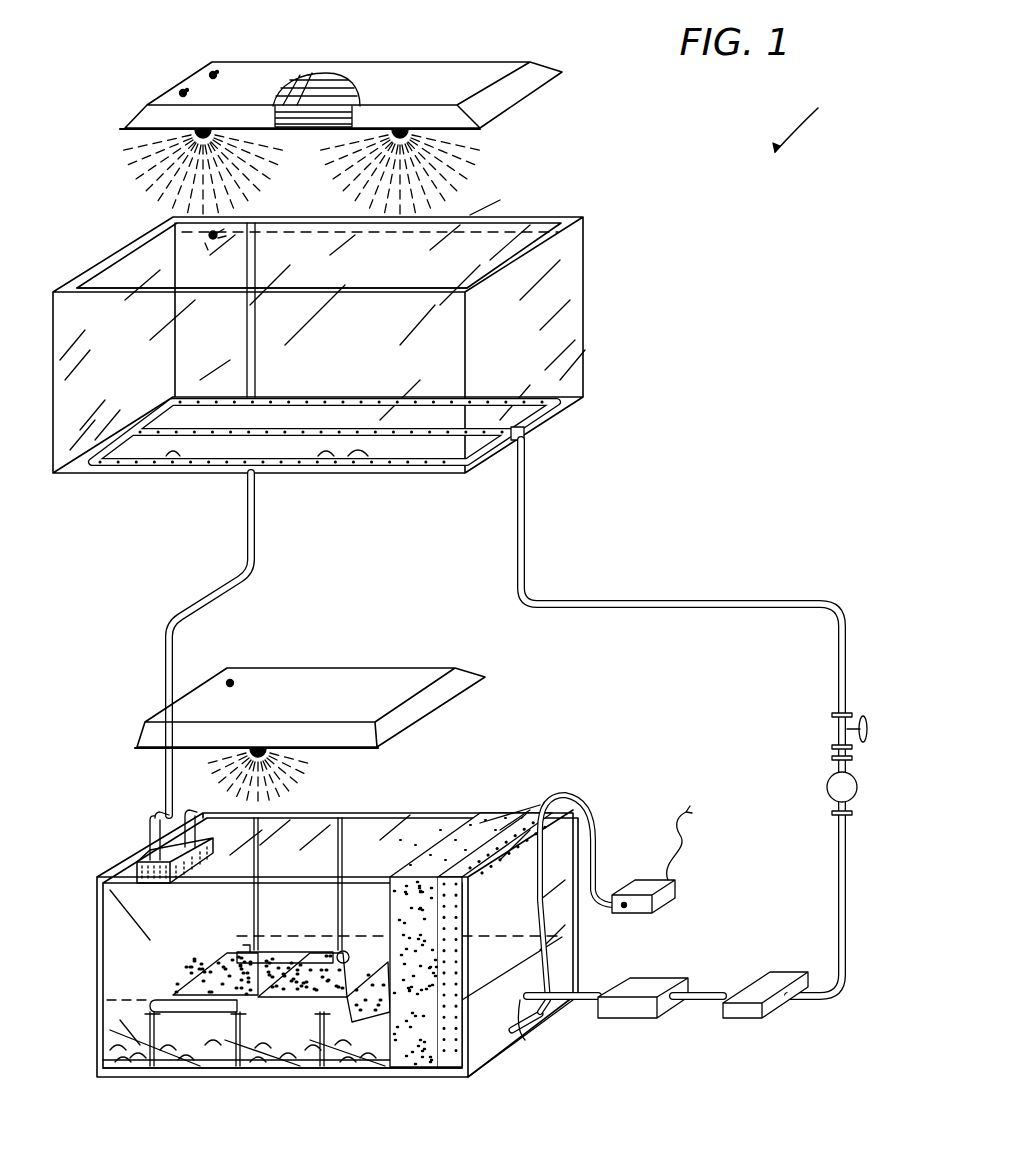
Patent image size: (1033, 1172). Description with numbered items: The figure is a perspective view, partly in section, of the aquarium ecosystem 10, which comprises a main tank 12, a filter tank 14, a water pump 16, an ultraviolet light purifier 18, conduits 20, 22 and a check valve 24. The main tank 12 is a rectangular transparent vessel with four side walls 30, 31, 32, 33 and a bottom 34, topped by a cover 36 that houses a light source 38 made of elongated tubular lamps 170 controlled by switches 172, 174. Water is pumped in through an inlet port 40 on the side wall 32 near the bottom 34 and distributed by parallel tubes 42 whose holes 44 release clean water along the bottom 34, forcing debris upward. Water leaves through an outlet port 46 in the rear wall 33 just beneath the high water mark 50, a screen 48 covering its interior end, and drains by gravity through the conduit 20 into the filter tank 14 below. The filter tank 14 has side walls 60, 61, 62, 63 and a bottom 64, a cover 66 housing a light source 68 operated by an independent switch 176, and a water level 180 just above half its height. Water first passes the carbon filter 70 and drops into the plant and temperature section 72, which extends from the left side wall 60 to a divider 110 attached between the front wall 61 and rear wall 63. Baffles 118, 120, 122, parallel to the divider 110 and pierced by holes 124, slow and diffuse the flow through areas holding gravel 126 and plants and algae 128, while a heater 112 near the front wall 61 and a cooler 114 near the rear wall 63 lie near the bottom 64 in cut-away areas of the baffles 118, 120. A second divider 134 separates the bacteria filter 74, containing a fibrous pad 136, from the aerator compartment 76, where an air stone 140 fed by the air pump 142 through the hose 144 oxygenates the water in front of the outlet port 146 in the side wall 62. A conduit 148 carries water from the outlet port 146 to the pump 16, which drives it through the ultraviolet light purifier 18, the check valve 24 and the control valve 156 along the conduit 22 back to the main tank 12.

The aquarium ecosystem 10 is at (810, 120).
The main tank 12 is at (358, 348).
The filter tank 14 is at (416, 952).
The water pump 16 is at (660, 982).
The ultraviolet light purifier 18 is at (782, 975).
The conduit 20 is at (192, 614).
The conduit 22 is at (714, 718).
The check valve 24 is at (852, 792).
The side wall 30 is at (150, 256).
The side wall 31 is at (97, 455).
The side wall 32 is at (572, 358).
The rear wall 33 is at (505, 243).
The bottom 34 is at (560, 400).
The cover 36 is at (334, 113).
The light source 38 is at (332, 78).
The inlet port 40 is at (526, 436).
The tubes 42 is at (329, 428).
The holes 44 is at (173, 466).
The outlet port 46 is at (218, 238).
The screen 48 is at (208, 244).
The high water mark 50 is at (280, 232).
The left side wall 60 is at (301, 947).
The front wall 61 is at (466, 1082).
The right side wall 62 is at (490, 1050).
The rear wall 63 is at (375, 826).
The bottom 64 is at (318, 1068).
The cover 66 is at (295, 713).
The light source 68 is at (200, 782).
The carbon filter 70 is at (140, 858).
The plant and temperature section 72 is at (120, 963).
The bacteria filter 74 is at (492, 820).
The aerator compartment 76 is at (508, 818).
The divider 110 is at (378, 1068).
The heater 112 is at (168, 998).
The cooler 114 is at (232, 950).
The baffle 118 is at (248, 948).
The baffle 120 is at (304, 948).
The baffle 122 is at (346, 948).
The holes 124 is at (160, 1068).
The gravel 126 is at (270, 1068).
The plants and algae 128 is at (196, 1068).
The second divider 134 is at (493, 860).
The pad 136 is at (459, 940).
The air stone 140 is at (528, 1030).
The pump 142 is at (632, 880).
The hose 144 is at (592, 818).
The outlet port 146 is at (530, 1000).
The conduit 148 is at (598, 992).
The control valve 156 is at (866, 718).
The tubular lamps 170 is at (288, 118).
The switch 172 is at (180, 91).
The switch 174 is at (210, 73).
The switch 176 is at (232, 680).
The water level 180 is at (265, 930).